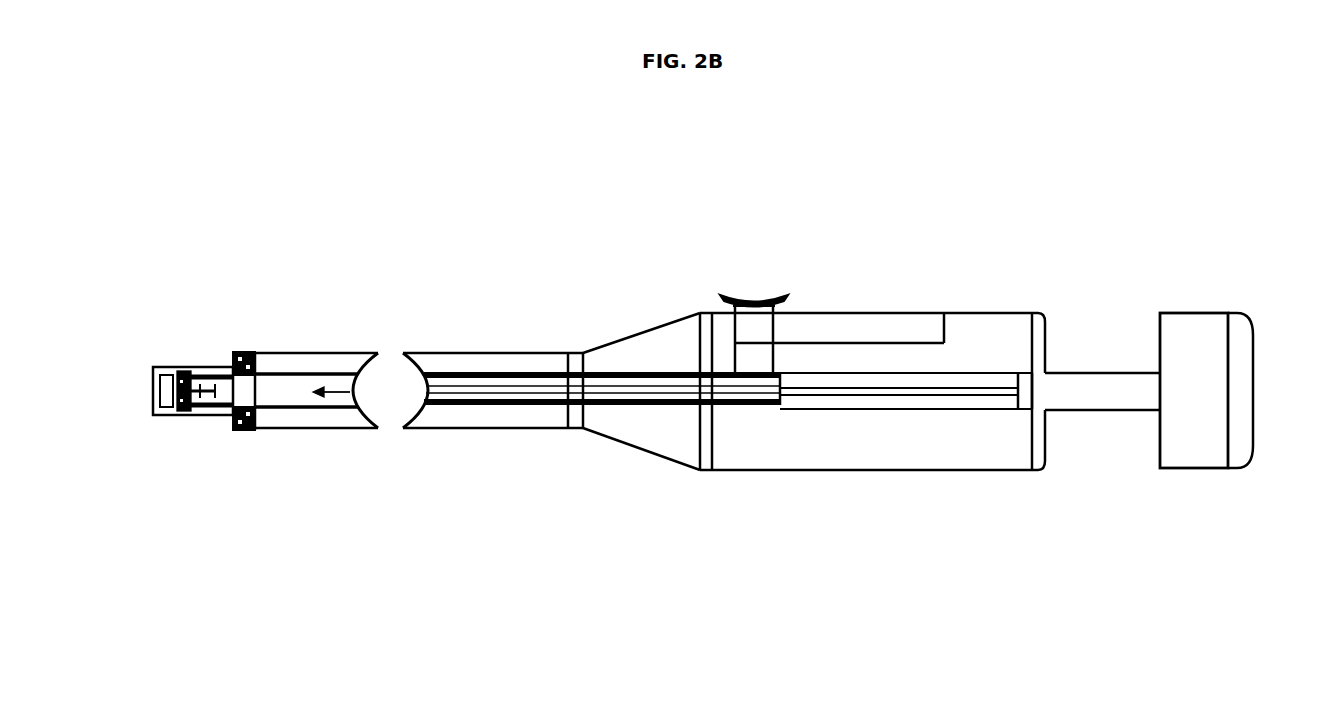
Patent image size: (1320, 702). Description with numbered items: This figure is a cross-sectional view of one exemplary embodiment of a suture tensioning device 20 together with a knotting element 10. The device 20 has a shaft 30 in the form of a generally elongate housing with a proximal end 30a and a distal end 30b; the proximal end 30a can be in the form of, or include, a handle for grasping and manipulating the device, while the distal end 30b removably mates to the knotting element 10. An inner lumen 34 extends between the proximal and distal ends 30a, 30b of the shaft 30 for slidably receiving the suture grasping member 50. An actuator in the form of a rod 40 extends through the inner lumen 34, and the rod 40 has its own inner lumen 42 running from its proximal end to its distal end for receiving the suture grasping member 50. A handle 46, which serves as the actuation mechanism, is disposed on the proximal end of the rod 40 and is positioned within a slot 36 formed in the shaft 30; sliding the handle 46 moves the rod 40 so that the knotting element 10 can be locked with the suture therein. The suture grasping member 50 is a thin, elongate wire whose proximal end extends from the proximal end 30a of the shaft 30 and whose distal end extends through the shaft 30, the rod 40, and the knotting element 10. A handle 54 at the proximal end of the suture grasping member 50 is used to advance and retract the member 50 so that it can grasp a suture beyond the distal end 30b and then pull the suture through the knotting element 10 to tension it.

The knotting element 10 is at (198, 352).
The suture tensioning device 20 is at (305, 137).
The shaft 30 is at (988, 335).
The proximal end of the shaft 30a is at (1045, 482).
The distal end of the shaft 30b is at (271, 446).
The inner lumen 34 is at (900, 400).
The slot 36 is at (845, 335).
The rod 40 is at (612, 375).
The inner lumen of the rod 42 is at (486, 395).
The handle 46 is at (754, 295).
The suture grasping member 50 is at (520, 388).
The handle 54 is at (1205, 372).